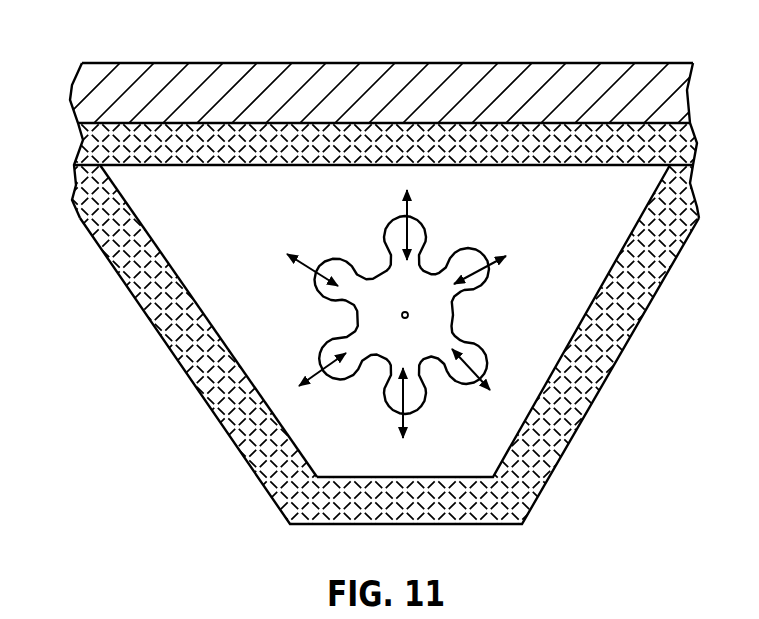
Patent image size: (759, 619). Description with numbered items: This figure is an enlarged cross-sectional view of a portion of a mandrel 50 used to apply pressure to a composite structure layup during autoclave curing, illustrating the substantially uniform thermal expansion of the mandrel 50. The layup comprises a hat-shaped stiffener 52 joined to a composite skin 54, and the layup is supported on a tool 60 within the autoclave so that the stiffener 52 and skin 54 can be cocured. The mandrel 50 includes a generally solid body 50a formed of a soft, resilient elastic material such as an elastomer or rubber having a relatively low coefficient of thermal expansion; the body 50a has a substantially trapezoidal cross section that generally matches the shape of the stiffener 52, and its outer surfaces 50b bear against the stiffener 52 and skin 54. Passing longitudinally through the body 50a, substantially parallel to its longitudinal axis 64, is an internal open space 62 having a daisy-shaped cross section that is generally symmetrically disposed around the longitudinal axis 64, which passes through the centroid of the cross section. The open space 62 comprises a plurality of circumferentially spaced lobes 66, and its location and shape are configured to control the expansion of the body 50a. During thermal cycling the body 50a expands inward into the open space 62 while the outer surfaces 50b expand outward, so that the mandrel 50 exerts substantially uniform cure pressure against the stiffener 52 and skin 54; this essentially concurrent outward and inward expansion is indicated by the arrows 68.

The mandrel 50 is at (170, 289).
The mandrel body 50a is at (233, 310).
The outer surfaces 50b is at (360, 160).
The hat-shaped stiffener 52 is at (547, 427).
The composite skin 54 is at (137, 143).
The tool 60 is at (587, 97).
The internal open space 62 is at (341, 399).
The longitudinal axis 64 is at (430, 309).
The lobes 66 is at (339, 262).
The arrows 68 is at (414, 219).